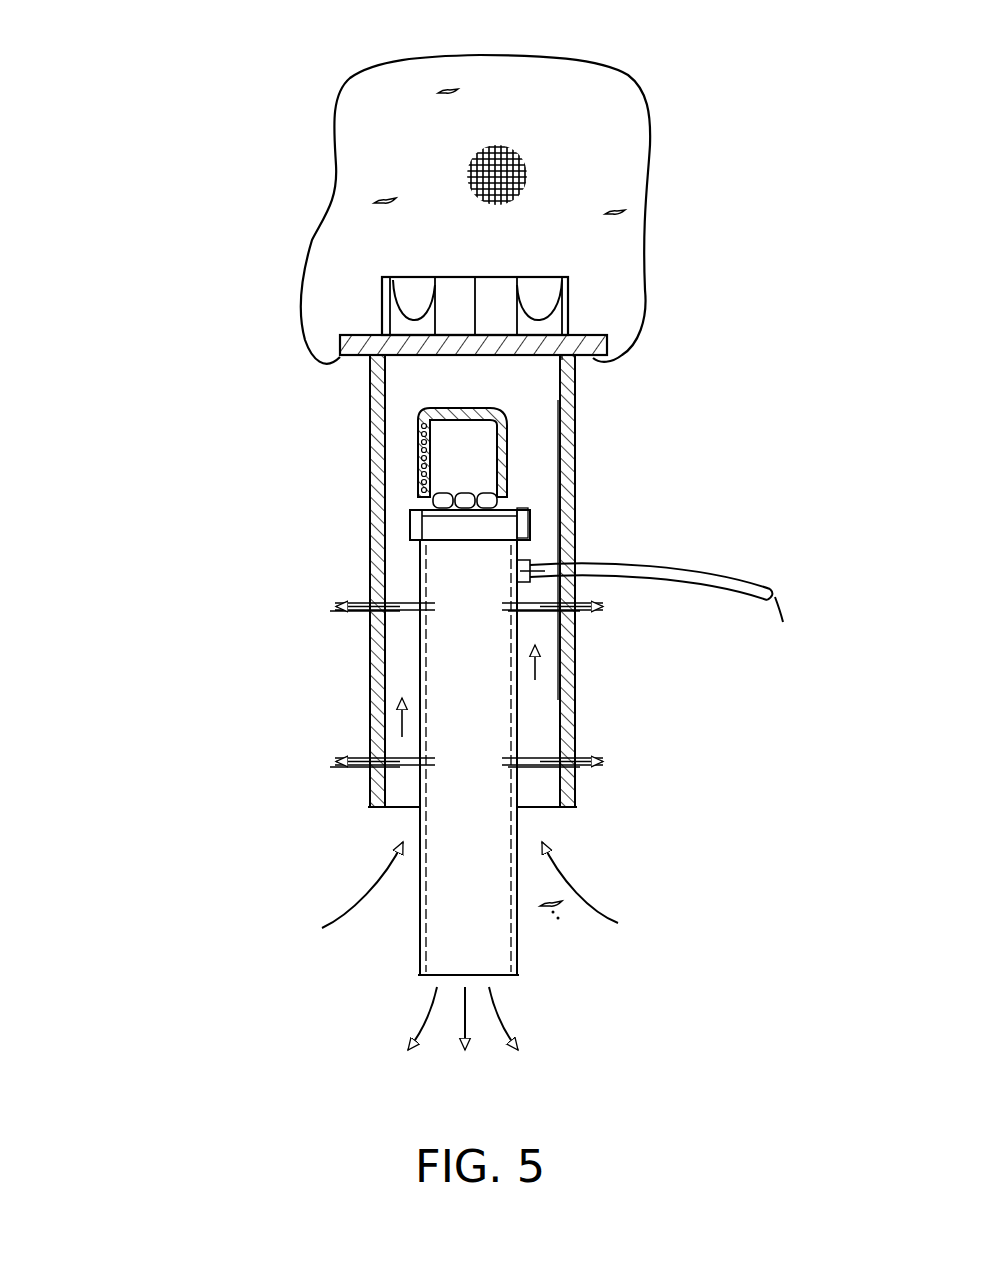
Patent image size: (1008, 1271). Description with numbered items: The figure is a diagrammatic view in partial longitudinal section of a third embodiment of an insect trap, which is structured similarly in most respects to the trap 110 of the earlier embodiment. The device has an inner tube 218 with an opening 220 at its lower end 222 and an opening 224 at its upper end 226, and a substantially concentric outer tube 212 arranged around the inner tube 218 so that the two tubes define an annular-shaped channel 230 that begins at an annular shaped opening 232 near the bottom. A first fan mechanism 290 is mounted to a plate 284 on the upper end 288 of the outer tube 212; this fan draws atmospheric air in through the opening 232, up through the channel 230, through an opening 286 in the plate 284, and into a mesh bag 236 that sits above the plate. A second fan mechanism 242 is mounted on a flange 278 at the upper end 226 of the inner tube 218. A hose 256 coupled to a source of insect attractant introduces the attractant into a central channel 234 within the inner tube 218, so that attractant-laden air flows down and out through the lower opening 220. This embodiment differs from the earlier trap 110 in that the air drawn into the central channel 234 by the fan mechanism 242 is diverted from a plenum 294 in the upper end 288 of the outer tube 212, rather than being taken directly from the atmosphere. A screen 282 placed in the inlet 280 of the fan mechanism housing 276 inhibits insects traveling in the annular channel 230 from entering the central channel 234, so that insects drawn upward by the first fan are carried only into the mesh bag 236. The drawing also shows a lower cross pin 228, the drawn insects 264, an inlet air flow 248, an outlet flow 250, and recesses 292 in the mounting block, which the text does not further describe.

The trap 110 is at (232, 528).
The outer tube 212 is at (580, 503).
The inner tube 218 is at (422, 560).
The opening 220 is at (437, 979).
The lower end 222 is at (418, 957).
The opening 224 is at (522, 505).
The upper end 226 is at (522, 550).
The lower cross pin 228 is at (335, 760).
The annular-shaped channel 230 is at (548, 697).
The annular shaped opening 232 is at (392, 812).
The central channel 234 is at (437, 634).
The mesh bag 236 is at (660, 121).
The fan mechanism 242 is at (466, 556).
The inlet air flow 248 is at (582, 838).
The outlet flow 250 is at (540, 1023).
The hose 256 is at (670, 615).
The insects 264 is at (372, 200).
The fan mechanism housing 276 is at (418, 400).
The flange 278 is at (412, 522).
The inlet 280 is at (420, 470).
The screen 282 is at (420, 438).
The plate 284 is at (588, 356).
The opening 286 is at (373, 385).
The upper end 288 is at (578, 425).
The fan mechanism 290 is at (570, 290).
The recesses 292 is at (537, 288).
The plenum 294 is at (605, 332).